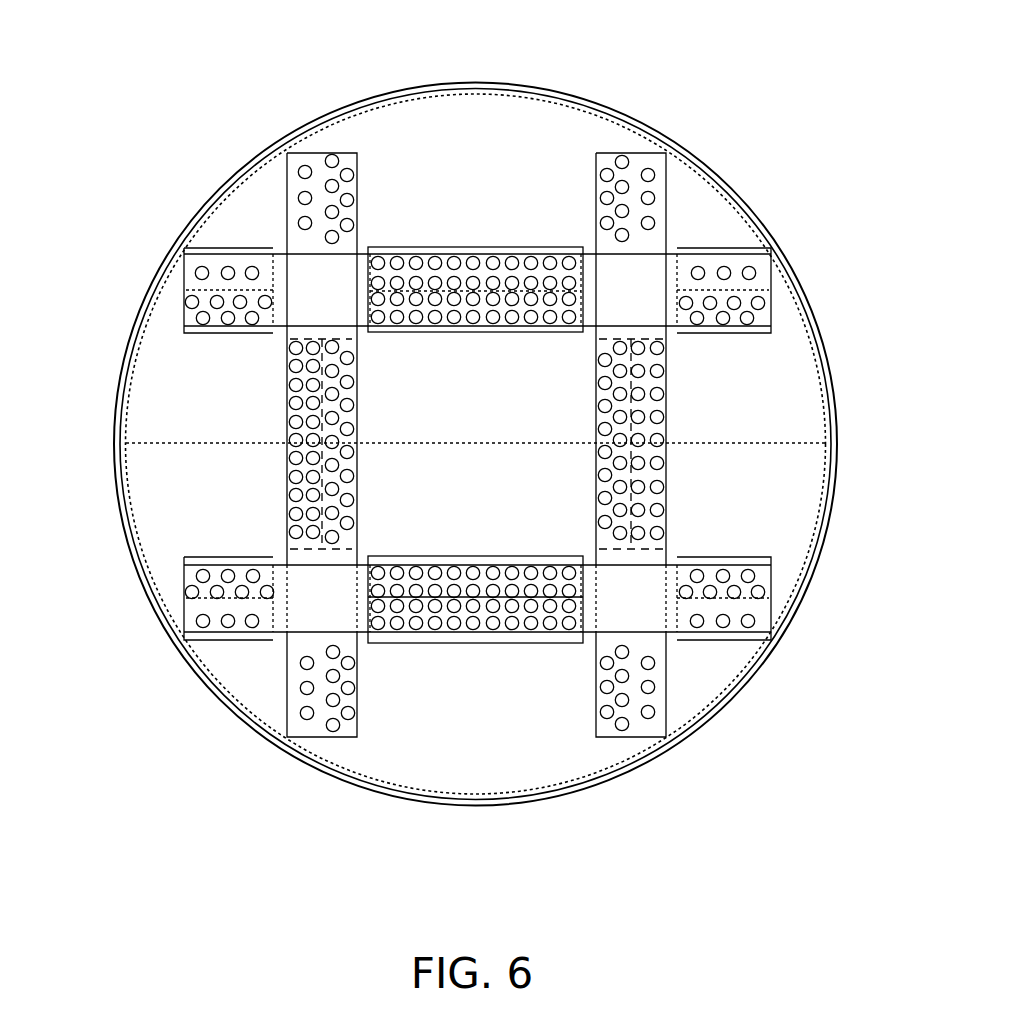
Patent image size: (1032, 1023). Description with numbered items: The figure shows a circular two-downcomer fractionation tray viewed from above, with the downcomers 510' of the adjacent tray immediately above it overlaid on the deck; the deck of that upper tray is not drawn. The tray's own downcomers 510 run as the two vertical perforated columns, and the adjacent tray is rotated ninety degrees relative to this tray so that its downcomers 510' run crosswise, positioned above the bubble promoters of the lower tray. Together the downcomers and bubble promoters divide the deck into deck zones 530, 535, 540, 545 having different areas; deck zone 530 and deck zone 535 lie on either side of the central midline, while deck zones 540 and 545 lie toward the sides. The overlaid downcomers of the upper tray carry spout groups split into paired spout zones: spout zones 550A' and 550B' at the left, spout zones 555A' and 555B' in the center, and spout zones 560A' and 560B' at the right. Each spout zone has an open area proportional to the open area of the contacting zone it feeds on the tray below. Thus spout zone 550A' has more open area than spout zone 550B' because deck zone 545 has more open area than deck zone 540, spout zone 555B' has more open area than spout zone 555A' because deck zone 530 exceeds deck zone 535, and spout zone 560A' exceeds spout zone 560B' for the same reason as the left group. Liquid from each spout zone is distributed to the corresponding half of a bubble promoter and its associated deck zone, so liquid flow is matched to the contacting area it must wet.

The deck zone 530 is at (446, 108).
The deck zone 540 is at (238, 193).
The downcomers 510 is at (476, 703).
The downcomers of the adjacent tray 510' is at (791, 444).
The deck zone 545 is at (138, 408).
The deck zone 535 is at (556, 432).
The spout zone 550A' is at (144, 310).
The spout zone 550B' is at (161, 290).
The spout zone 560A' is at (800, 309).
The spout zone 560B' is at (783, 256).
The spout zone 555A' is at (473, 339).
The spout zone 555B' is at (475, 267).